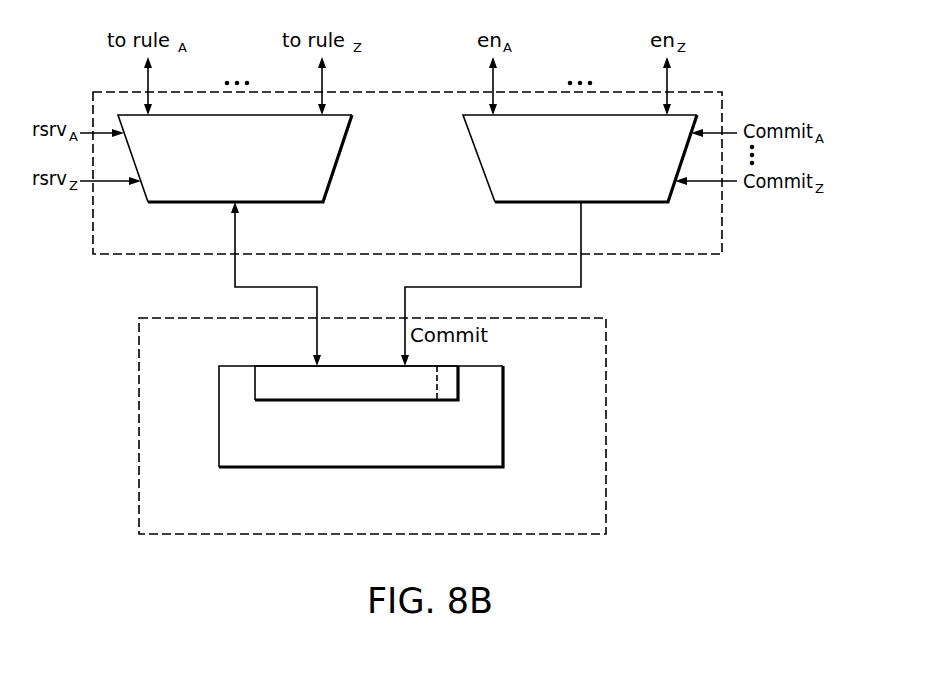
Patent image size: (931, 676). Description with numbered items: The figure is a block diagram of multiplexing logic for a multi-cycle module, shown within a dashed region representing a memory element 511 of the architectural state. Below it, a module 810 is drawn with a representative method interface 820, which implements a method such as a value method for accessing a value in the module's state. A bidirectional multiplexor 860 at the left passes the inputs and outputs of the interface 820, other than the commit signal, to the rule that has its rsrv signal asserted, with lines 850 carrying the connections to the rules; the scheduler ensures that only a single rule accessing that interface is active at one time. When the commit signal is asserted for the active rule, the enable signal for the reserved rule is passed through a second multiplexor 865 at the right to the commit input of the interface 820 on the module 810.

The memory element 511 is at (697, 254).
The module 810 is at (504, 417).
The method interface 820 is at (358, 402).
The output lines 850 is at (145, 78).
The bidirectional multiplexor 860 is at (305, 203).
The second multiplexor 865 is at (507, 203).